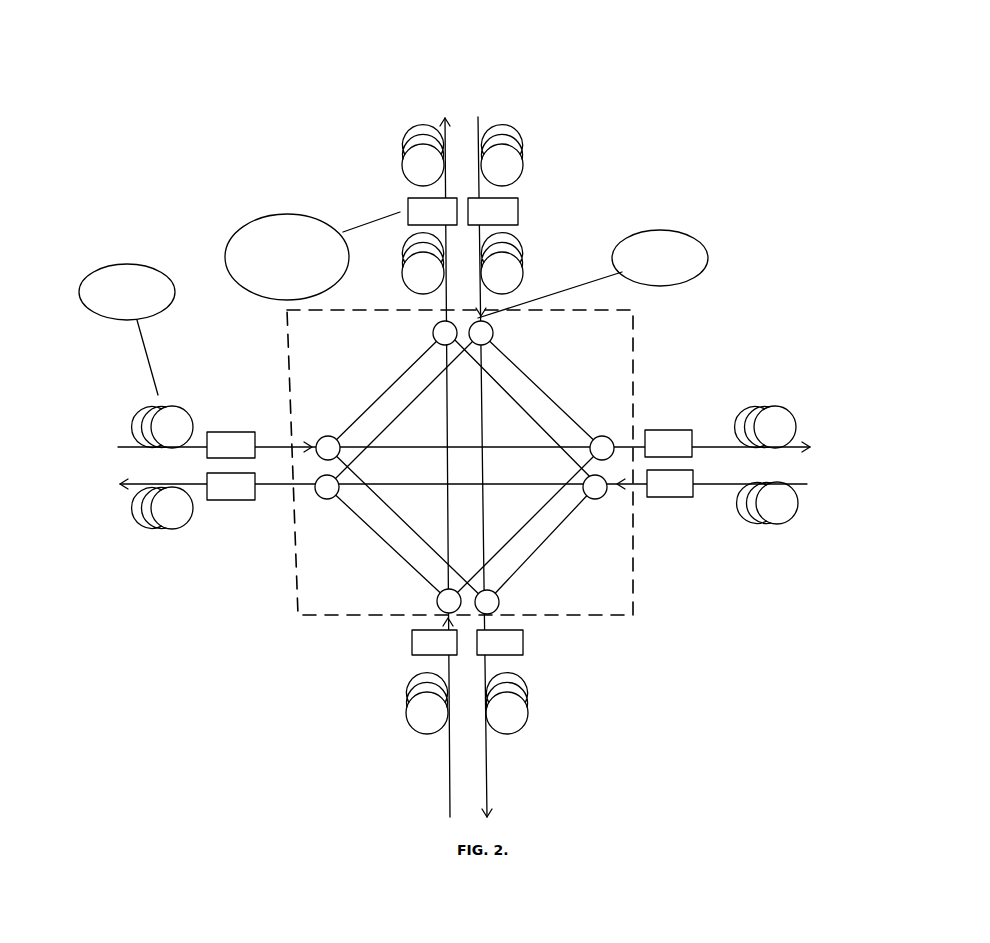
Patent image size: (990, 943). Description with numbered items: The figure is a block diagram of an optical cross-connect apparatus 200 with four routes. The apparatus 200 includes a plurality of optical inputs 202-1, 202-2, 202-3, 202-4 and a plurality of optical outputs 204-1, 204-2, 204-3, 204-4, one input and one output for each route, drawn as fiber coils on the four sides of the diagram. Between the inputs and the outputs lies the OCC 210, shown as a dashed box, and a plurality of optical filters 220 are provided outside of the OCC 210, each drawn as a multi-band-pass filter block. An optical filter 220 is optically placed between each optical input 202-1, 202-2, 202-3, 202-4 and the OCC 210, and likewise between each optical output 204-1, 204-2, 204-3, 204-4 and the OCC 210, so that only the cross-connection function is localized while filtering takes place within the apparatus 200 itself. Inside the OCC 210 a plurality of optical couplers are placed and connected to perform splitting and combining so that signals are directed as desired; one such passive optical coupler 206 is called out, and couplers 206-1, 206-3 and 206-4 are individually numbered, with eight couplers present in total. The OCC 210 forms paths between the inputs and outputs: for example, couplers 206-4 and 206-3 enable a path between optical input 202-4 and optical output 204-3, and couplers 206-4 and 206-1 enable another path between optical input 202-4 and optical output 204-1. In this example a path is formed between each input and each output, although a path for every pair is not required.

The optical cross-connect apparatus 200 is at (308, 42).
The optical input 202-1 is at (118, 447).
The optical input 202-2 is at (488, 120).
The optical input 202-3 is at (802, 484).
The optical input 202-4 is at (448, 762).
The optical output 204-1 is at (121, 484).
The optical output 204-2 is at (440, 117).
The optical output 204-3 is at (797, 447).
The optical output 204-4 is at (488, 780).
The optical coupler 206 is at (697, 262).
The optical coupler 206-1 is at (325, 490).
The optical coupler 206-3 is at (612, 442).
The optical coupler 206-4 is at (447, 600).
The OCC 210 is at (633, 390).
The optical filter 220 is at (678, 497).